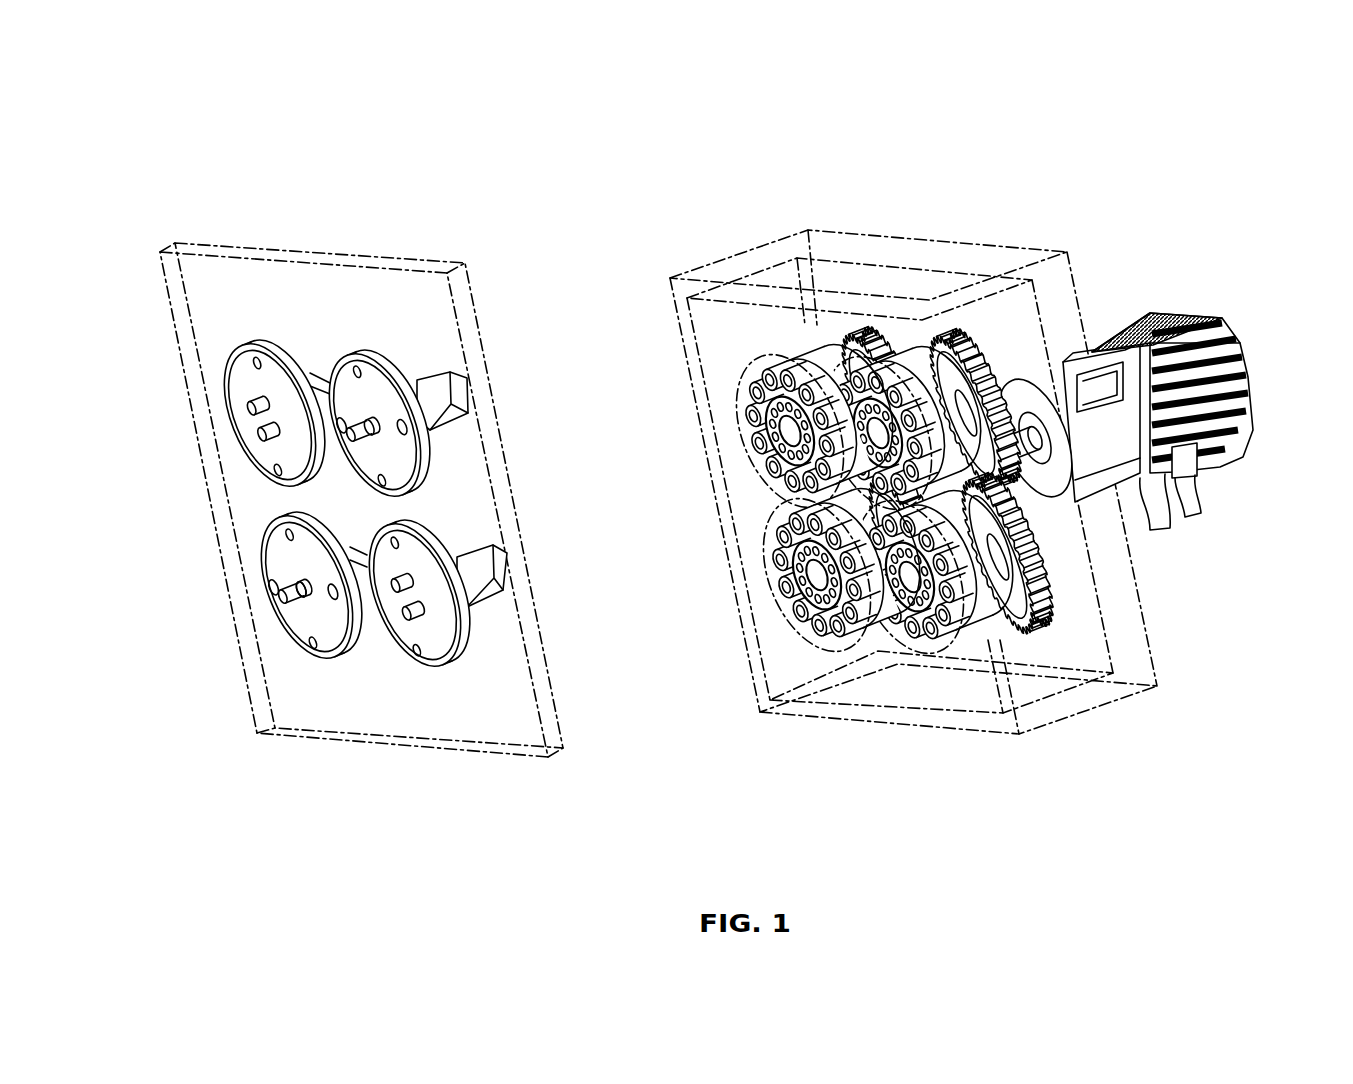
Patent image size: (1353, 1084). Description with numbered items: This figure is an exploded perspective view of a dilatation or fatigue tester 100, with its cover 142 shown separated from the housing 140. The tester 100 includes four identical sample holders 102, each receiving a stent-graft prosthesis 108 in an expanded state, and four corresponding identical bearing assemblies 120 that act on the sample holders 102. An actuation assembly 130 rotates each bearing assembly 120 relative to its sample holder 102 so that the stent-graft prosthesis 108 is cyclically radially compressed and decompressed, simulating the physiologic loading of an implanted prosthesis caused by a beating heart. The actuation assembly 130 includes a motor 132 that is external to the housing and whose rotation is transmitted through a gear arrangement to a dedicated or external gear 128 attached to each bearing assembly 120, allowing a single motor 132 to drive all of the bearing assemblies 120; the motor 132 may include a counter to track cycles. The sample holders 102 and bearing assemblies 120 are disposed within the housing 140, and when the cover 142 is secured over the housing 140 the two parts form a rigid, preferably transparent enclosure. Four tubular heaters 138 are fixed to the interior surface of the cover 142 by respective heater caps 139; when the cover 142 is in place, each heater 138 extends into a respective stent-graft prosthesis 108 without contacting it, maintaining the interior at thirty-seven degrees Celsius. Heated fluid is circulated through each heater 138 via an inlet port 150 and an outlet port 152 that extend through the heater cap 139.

The dilatation tester 100 is at (305, 178).
The sample holder 102 is at (912, 355).
The stent-graft prosthesis 108 is at (920, 372).
The bearing assembly 120 is at (847, 340).
The dedicated or external gear 128 is at (838, 335).
The actuation assembly 130 is at (1204, 508).
The motor 132 is at (1130, 434).
The tubular heater 138 is at (457, 403).
The heater cap 139 is at (398, 462).
The housing 140 is at (1073, 710).
The cover 142 is at (492, 740).
The inlet port 150 is at (297, 588).
The outlet port 152 is at (313, 597).